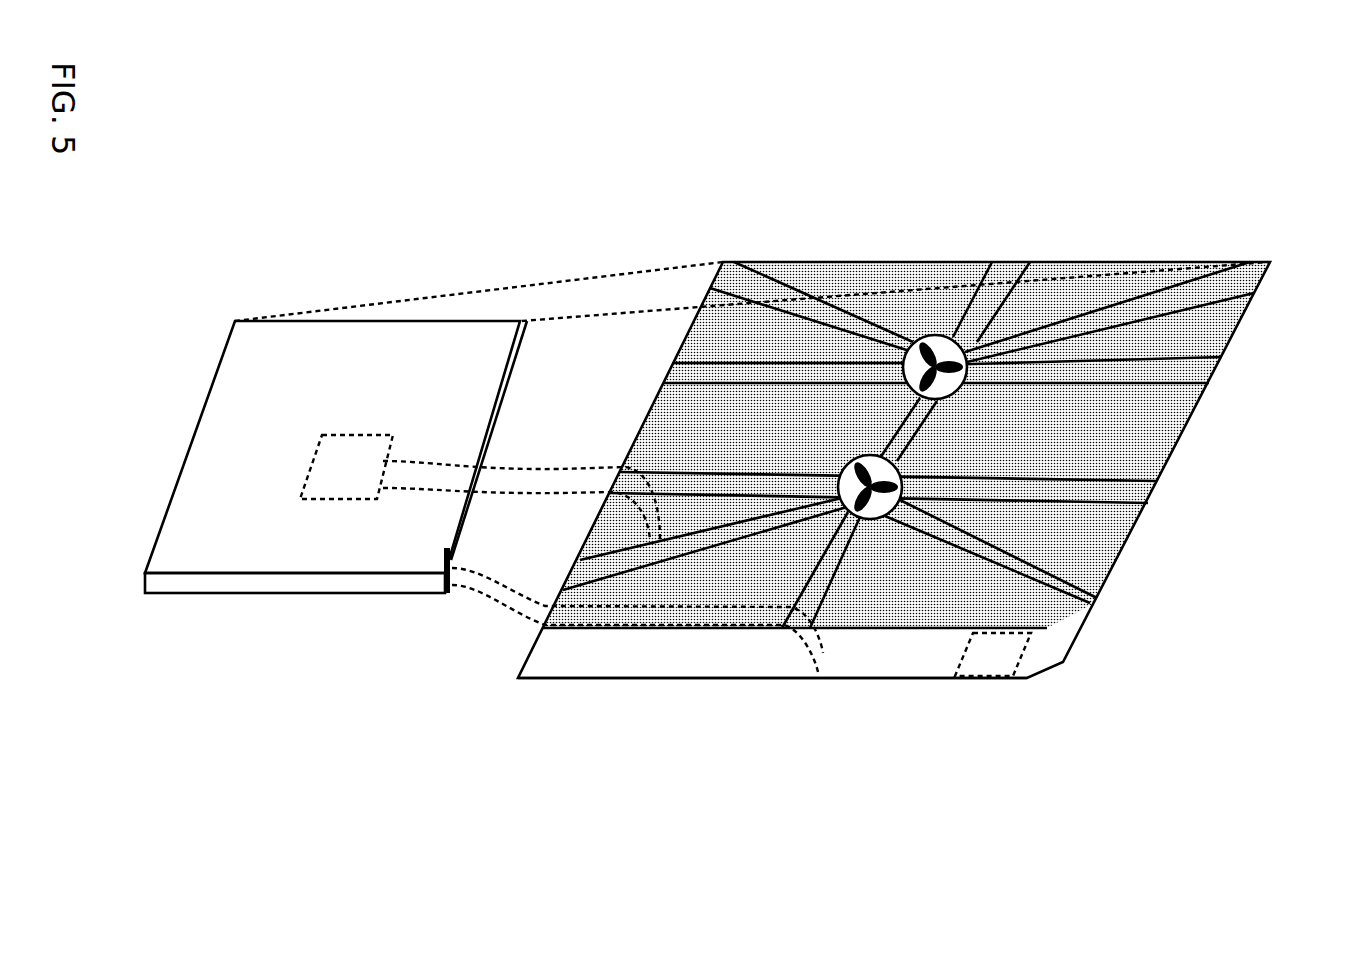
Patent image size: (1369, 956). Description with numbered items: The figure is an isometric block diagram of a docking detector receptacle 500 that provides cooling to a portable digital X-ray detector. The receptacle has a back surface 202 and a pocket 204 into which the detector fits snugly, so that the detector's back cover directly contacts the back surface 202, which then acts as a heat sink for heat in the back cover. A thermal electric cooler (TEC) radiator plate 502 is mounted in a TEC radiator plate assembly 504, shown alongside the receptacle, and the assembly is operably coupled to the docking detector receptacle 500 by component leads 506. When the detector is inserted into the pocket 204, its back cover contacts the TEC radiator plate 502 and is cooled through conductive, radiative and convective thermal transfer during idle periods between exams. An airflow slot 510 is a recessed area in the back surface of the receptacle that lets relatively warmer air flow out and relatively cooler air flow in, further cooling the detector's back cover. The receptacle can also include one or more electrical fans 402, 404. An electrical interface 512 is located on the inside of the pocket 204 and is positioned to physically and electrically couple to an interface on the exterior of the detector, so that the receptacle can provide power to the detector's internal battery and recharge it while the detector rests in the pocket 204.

The back surface 202 is at (860, 262).
The pocket 204 is at (810, 678).
The electrical fan 402 is at (935, 335).
The electrical fan 404 is at (903, 470).
The docking detector receptacle 500 is at (1332, 814).
The TEC radiator plate 502 is at (328, 492).
The TEC radiator plate assembly 504 is at (308, 593).
The component leads 506 is at (582, 606).
The airflow slot 510 is at (1213, 372).
The electrical interface 512 is at (1040, 634).